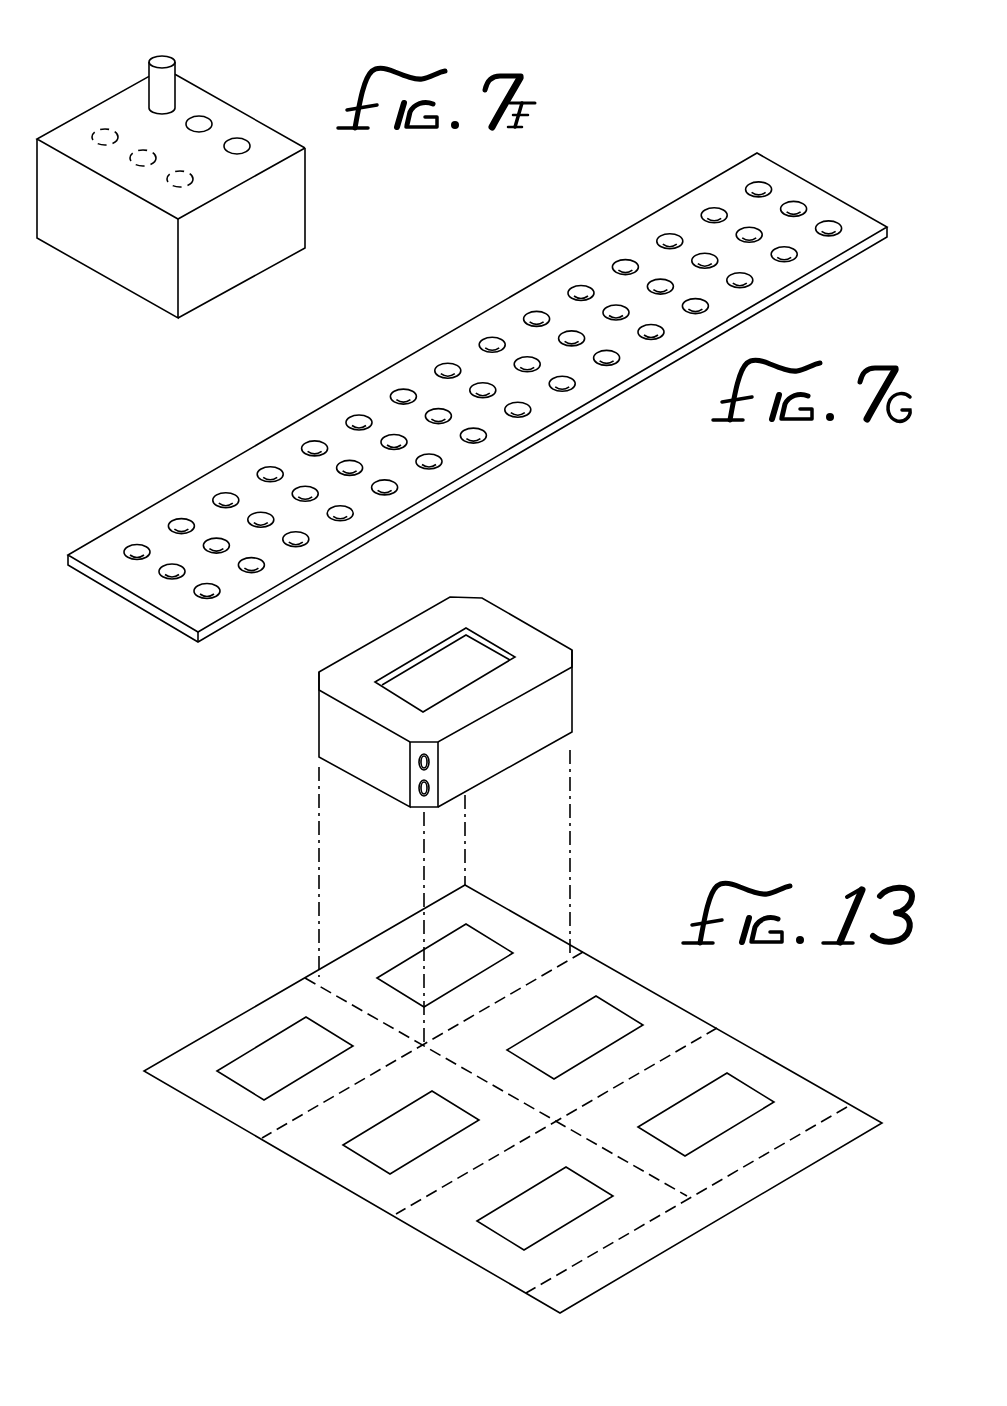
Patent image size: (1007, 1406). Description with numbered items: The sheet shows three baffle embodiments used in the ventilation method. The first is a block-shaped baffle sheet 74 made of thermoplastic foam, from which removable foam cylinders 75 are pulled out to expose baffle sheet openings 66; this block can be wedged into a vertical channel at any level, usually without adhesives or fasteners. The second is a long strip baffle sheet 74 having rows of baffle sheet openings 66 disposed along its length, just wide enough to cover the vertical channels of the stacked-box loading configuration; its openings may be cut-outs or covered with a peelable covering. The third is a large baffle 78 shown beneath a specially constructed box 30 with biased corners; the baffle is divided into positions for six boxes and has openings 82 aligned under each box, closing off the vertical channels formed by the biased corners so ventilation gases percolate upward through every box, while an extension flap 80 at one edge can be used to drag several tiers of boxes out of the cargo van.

In FIG. 7F, the block / strip body 74 is at (305, 202).
In FIG. 7G, the block / strip body 74 is at (382, 417).
In FIG. 7F, the pin 75 is at (163, 87).
In FIG. 7F, the baffle sheet openings 66 is at (237, 147).
In FIG. 7G, the baffle sheet openings 66 is at (450, 368).
In FIG. 13, the box 30 is at (515, 628).
In FIG. 13, the large baffle 78 is at (602, 891).
In FIG. 13, the extension flap 80 is at (740, 1206).
In FIG. 13, the rectangular openings 82 is at (480, 952).